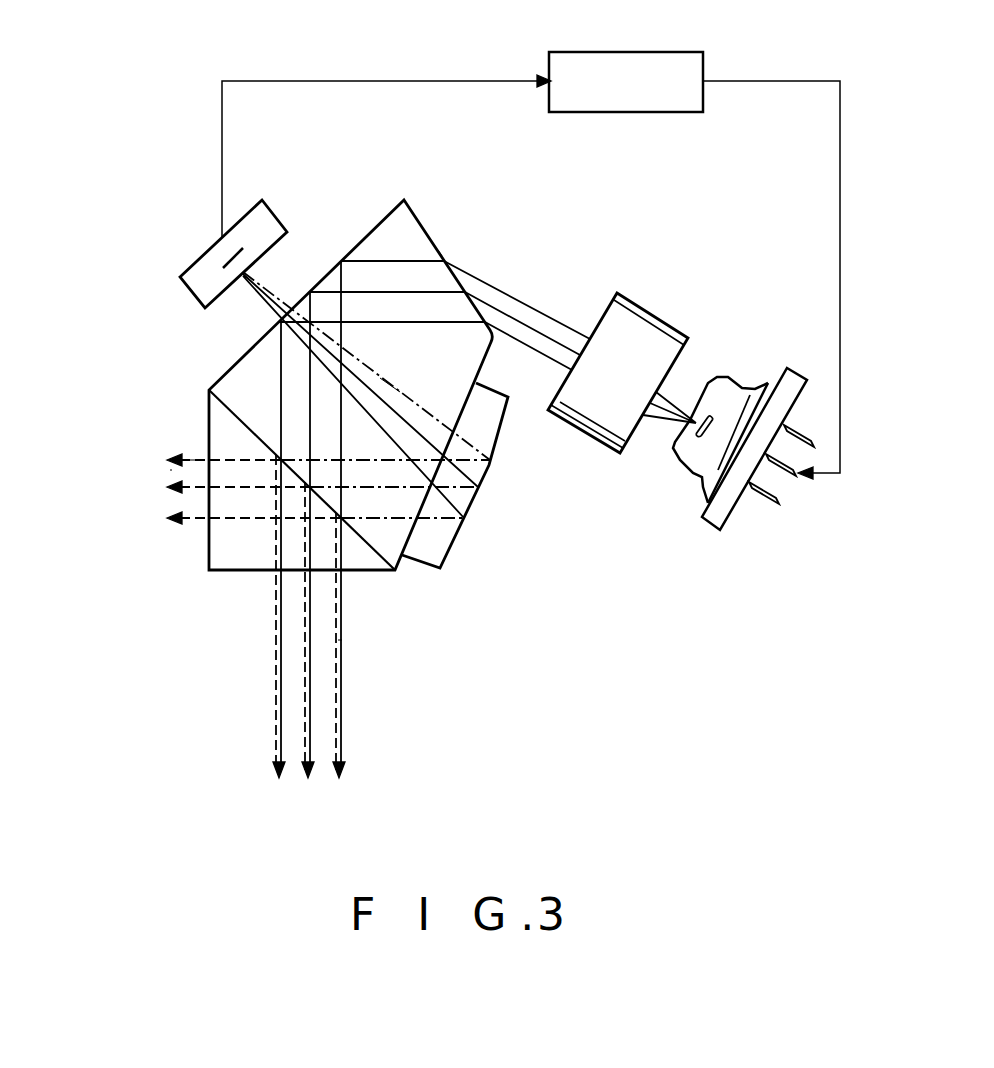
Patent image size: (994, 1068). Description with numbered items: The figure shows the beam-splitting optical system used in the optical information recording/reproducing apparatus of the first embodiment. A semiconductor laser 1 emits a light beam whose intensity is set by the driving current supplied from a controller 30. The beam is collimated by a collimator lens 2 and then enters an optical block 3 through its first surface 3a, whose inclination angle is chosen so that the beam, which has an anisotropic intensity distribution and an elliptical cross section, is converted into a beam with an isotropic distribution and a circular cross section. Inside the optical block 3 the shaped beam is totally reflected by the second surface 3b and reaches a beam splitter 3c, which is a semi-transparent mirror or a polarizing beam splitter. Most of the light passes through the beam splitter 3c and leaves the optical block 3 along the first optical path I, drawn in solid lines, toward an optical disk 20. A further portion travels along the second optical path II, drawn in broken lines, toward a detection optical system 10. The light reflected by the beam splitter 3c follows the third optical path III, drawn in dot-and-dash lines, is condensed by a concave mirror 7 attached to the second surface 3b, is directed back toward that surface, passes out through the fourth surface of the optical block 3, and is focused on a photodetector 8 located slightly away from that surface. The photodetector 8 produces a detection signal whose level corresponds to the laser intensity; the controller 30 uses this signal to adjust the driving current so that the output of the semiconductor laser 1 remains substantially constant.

The semiconductor laser 1 is at (790, 370).
The collimator lens 2 is at (650, 313).
The optical block 3 is at (424, 224).
The first surface 3a is at (440, 249).
The second surface 3b is at (376, 227).
The beam splitter 3c is at (385, 574).
The concave mirror 7 is at (492, 437).
The photodetector 8 is at (286, 231).
The controller 30 is at (597, 52).
The detection optical system 10 is at (261, 498).
The optical disk 20 is at (308, 801).
The first optical path I is at (342, 640).
The second optical path II is at (201, 457).
The third optical path III is at (400, 365).